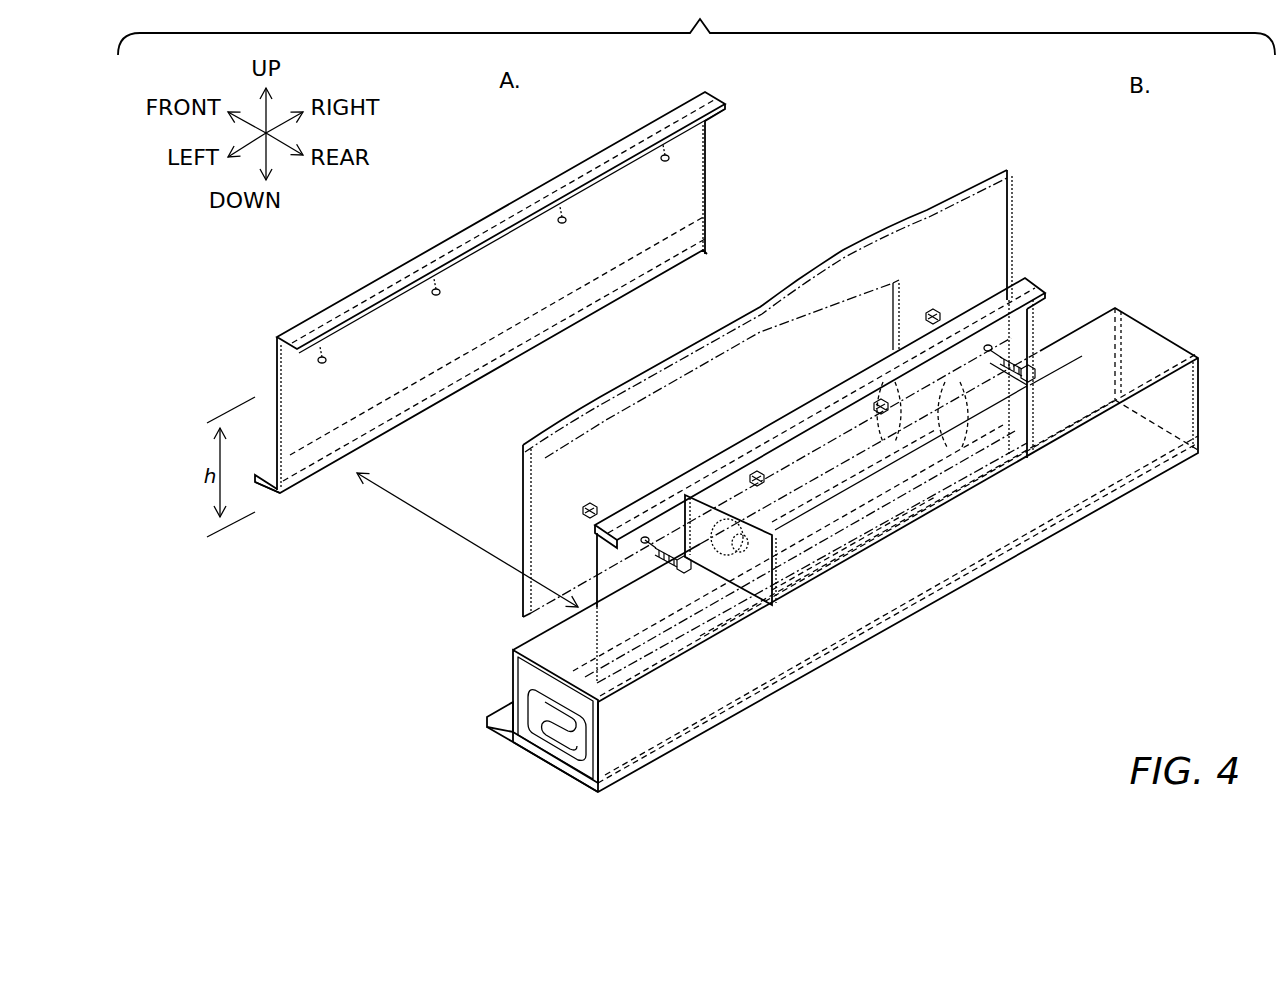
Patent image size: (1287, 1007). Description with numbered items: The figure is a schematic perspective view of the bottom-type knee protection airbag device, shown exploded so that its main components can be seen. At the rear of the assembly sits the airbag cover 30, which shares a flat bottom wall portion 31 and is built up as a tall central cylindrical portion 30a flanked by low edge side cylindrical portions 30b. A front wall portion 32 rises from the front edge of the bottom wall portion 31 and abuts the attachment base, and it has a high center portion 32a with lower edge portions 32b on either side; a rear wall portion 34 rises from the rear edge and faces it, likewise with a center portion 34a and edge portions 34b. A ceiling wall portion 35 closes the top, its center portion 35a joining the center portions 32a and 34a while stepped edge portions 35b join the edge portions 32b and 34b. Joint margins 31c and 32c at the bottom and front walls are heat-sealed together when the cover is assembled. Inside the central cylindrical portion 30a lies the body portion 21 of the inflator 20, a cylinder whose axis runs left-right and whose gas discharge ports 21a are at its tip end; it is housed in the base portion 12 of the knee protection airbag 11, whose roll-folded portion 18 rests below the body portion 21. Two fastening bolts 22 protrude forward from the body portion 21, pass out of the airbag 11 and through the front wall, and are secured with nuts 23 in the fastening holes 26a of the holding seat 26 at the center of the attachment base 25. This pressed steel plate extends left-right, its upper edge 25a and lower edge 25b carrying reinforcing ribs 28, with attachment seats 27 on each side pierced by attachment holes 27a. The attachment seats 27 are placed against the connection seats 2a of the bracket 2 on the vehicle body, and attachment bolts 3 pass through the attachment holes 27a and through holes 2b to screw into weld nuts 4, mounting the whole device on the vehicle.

The bracket 2 is at (745, 356).
The connection seat 2a is at (543, 523).
The through hole 2b is at (590, 503).
The attachment bolt 3 is at (683, 578).
The nut 4 is at (580, 503).
The knee protection airbag 11 is at (832, 738).
The base portion 12 is at (743, 563).
The folded portion 18 is at (882, 587).
The inflator 20 is at (907, 573).
The body portion 21 is at (985, 470).
The gas discharge port 21a is at (725, 640).
The fastening bolt 22 is at (737, 457).
The nut 23 is at (765, 453).
The attachment base 25 is at (735, 161).
The upper edge 25a is at (383, 255).
The lower edge 25b is at (317, 490).
The holding seat 26 is at (505, 250).
The fastening hole 26a is at (563, 215).
The attachment seat 27 is at (690, 142).
The attachment hole 27a is at (665, 152).
The reinforcing rib 28 is at (612, 175).
The airbag cover 30 is at (1095, 532).
The central cylindrical portion 30a is at (890, 477).
The edge side cylindrical portion 30b is at (1158, 300).
The bottom wall portion 31 is at (530, 763).
The joint margin 31c is at (487, 720).
The front wall portion 32 is at (667, 517).
The center portion 32a is at (667, 517).
The edge portion 32b is at (1080, 343).
The joint margin 32c is at (493, 675).
The rear wall portion 34 is at (1120, 453).
The center portion 34a is at (1007, 483).
The edge portion 34b is at (702, 692).
The ceiling wall portion 35 is at (796, 470).
The center portion 35a is at (796, 470).
The edge portion 35b is at (1148, 363).